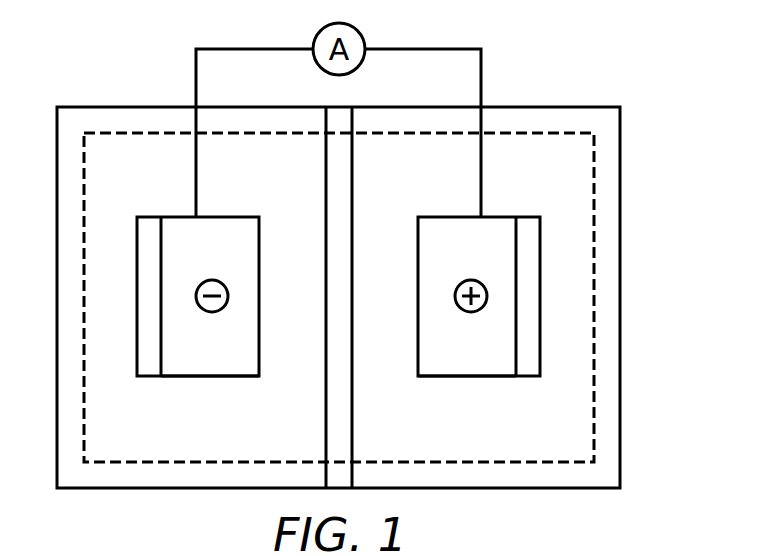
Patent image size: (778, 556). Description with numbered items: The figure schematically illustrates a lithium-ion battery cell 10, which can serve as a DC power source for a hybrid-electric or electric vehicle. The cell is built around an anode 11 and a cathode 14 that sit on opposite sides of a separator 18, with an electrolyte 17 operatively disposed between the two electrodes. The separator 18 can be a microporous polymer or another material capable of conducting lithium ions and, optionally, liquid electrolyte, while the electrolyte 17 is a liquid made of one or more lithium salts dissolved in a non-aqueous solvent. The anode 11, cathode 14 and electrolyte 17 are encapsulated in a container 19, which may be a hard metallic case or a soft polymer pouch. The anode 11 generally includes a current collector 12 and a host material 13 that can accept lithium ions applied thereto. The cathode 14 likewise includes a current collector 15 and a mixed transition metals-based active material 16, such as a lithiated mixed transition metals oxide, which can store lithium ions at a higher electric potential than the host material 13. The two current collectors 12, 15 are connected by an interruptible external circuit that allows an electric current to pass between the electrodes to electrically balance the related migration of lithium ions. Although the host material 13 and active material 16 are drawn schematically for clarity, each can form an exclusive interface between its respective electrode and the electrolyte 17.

The lithium-ion battery cell 10 is at (118, 60).
The anode 11 is at (165, 385).
The current collector 12 is at (220, 365).
The host material 13 is at (148, 290).
The cathode 14 is at (510, 385).
The current collector 15 is at (457, 366).
The active material 16 is at (528, 291).
The electrolyte 17 is at (306, 419).
The separator 18 is at (360, 185).
The container 19 is at (621, 262).